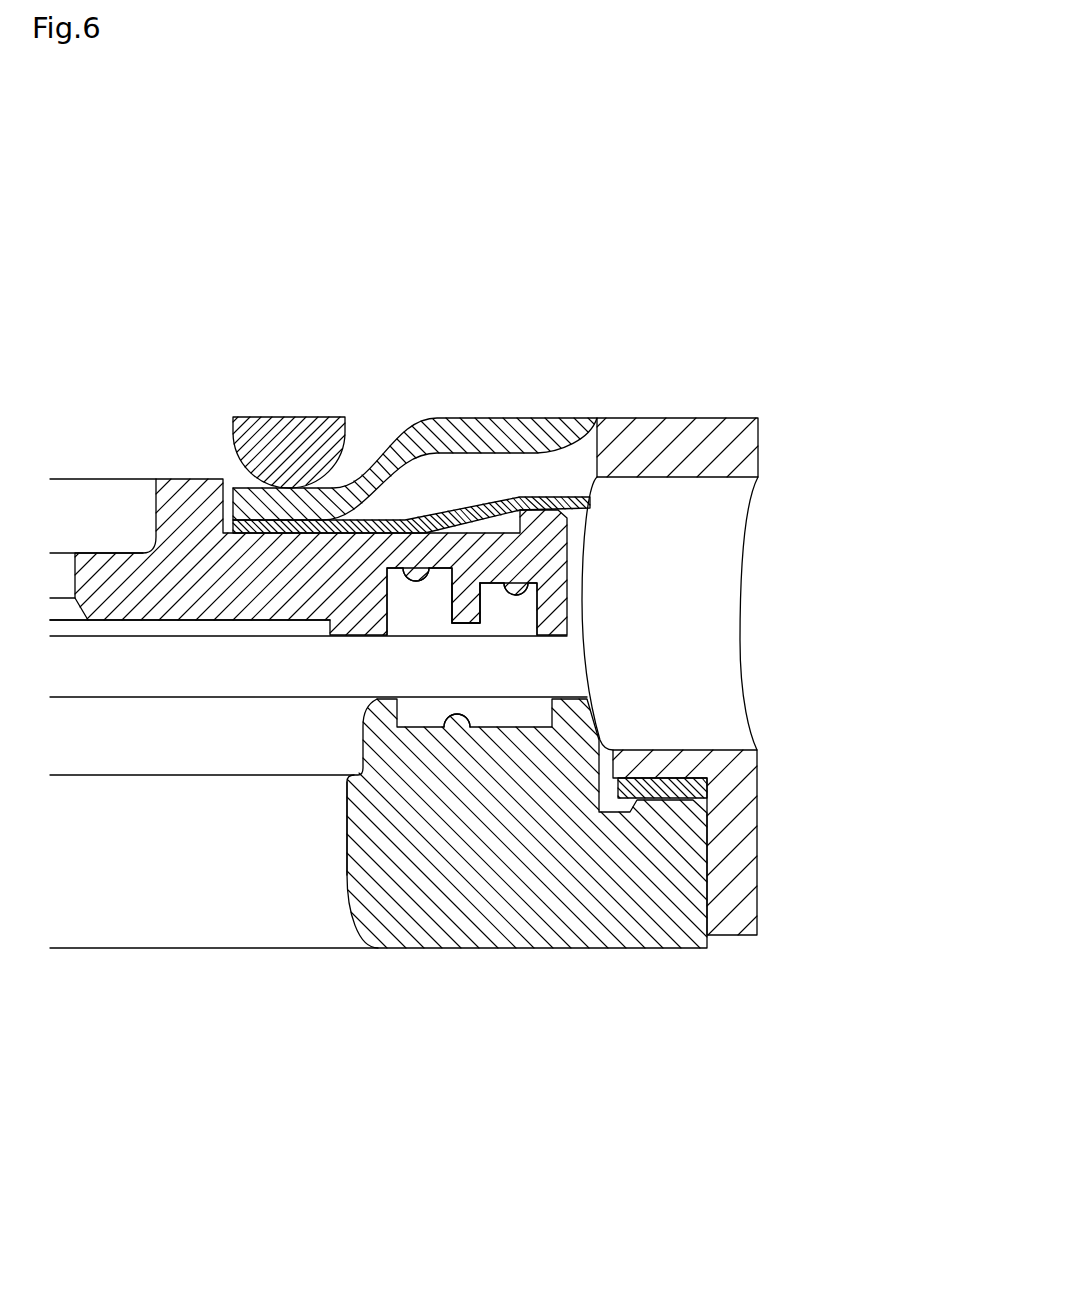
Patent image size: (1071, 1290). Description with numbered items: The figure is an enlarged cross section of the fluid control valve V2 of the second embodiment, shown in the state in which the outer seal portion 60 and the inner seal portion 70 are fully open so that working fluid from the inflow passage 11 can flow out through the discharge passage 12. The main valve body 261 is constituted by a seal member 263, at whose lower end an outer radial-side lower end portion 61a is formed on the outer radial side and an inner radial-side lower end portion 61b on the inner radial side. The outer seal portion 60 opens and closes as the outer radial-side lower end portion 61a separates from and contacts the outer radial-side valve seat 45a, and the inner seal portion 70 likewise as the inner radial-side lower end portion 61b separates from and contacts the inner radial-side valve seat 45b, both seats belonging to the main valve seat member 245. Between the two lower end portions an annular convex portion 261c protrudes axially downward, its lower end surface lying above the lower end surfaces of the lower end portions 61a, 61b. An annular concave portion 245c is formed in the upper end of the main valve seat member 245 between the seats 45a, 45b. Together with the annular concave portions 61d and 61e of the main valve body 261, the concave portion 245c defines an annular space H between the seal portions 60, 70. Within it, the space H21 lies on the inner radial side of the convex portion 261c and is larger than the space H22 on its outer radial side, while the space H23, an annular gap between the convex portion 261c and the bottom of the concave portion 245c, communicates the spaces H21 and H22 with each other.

The inflow passage 11 is at (347, 845).
The discharge passage 12 is at (693, 750).
The outer radial-side valve seat 45a is at (567, 695).
The inner radial-side valve seat 45b is at (383, 694).
The outer seal portion 60 is at (860, 587).
The outer radial-side lower end portion 61a is at (552, 653).
The inner radial-side lower end portion 61b is at (375, 638).
The annular concave portion 61d is at (528, 583).
The annular concave portion 61e is at (428, 566).
The inner seal portion 70 is at (173, 783).
The main valve seat member 245 is at (640, 955).
The annular concave portion 245c is at (446, 725).
The main valve body 261 is at (509, 557).
The seal member 263 is at (578, 579).
The annular convex portion 261c is at (490, 580).
The annular space H is at (632, 1117).
The annular space H21 is at (417, 600).
The annular space H22 is at (507, 607).
The space H23 is at (472, 626).
The fluid control valve V2 is at (698, 335).